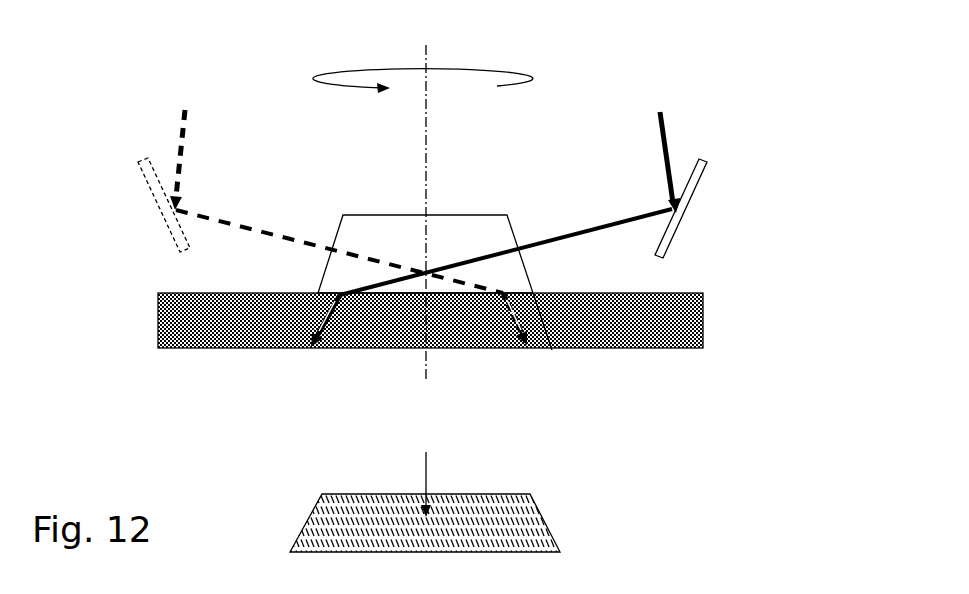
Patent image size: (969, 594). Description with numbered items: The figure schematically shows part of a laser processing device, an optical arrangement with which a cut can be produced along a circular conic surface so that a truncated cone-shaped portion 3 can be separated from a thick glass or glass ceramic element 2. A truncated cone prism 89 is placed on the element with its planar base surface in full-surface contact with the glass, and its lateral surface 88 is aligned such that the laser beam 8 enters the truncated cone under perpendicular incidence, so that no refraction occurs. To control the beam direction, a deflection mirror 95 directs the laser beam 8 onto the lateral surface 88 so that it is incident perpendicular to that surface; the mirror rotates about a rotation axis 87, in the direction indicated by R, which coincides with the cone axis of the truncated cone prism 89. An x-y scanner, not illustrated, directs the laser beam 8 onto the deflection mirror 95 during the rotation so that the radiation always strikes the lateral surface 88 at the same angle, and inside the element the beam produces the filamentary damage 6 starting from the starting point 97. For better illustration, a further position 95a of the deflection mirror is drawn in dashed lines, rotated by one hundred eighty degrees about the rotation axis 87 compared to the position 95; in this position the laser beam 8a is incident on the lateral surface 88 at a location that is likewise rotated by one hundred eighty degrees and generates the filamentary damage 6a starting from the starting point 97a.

The glass or glass ceramic element 2 is at (683, 352).
The truncated cone-shaped portion 3 is at (527, 525).
The filamentary damage 6 is at (312, 348).
The filamentary damage 6a is at (494, 349).
The laser beam 8 is at (658, 130).
The laser beam 8a is at (187, 123).
The rotation axis 87 is at (428, 187).
The lateral surface 88 is at (515, 227).
The truncated cone prism 89 is at (363, 215).
The deflection mirror 95 is at (703, 164).
The further position of the deflection mirror 95a is at (168, 225).
The starting point of the filamentary damage 97 is at (333, 300).
The starting point of the filamentary damage 97a is at (543, 350).